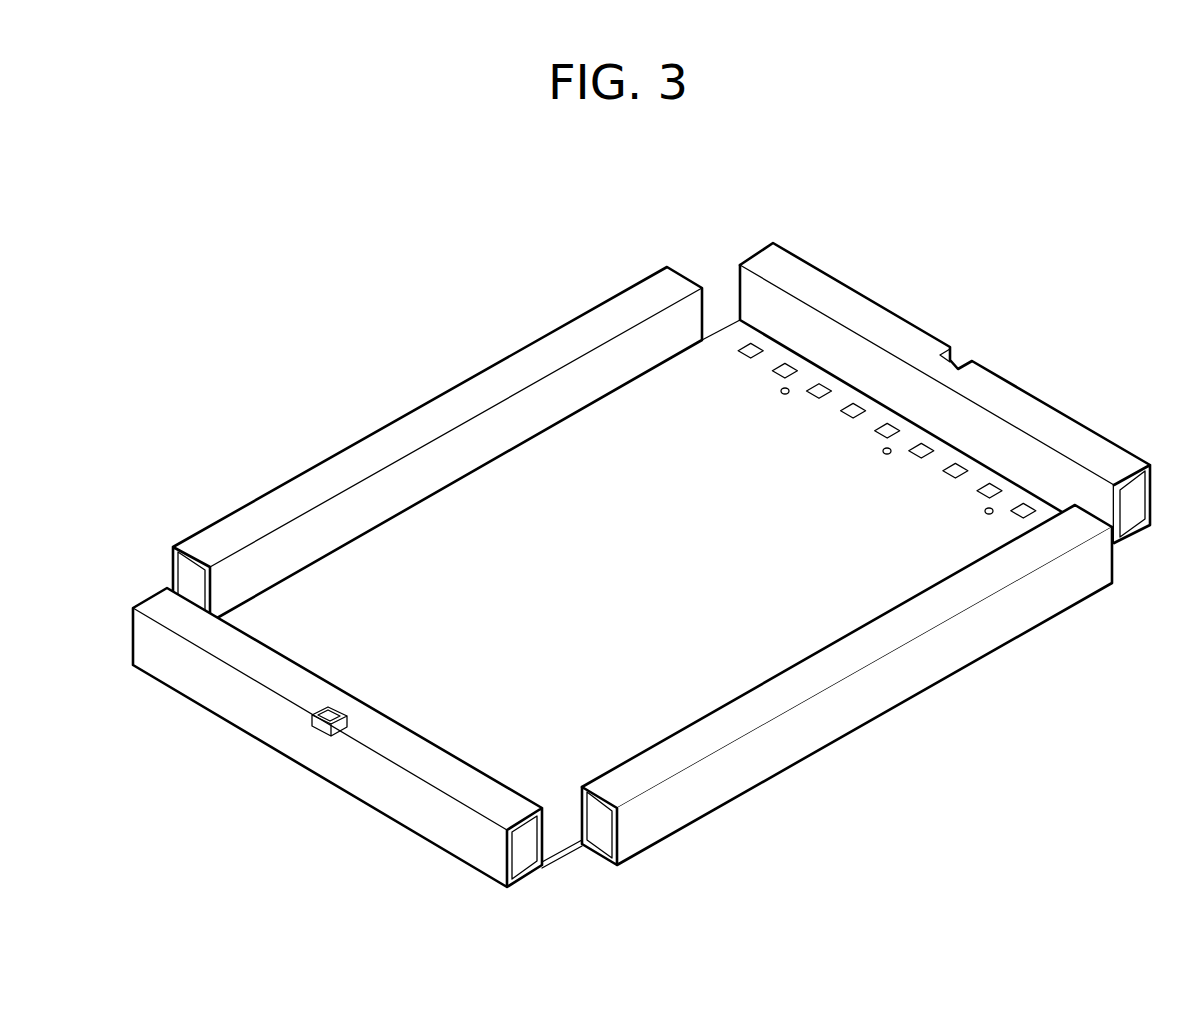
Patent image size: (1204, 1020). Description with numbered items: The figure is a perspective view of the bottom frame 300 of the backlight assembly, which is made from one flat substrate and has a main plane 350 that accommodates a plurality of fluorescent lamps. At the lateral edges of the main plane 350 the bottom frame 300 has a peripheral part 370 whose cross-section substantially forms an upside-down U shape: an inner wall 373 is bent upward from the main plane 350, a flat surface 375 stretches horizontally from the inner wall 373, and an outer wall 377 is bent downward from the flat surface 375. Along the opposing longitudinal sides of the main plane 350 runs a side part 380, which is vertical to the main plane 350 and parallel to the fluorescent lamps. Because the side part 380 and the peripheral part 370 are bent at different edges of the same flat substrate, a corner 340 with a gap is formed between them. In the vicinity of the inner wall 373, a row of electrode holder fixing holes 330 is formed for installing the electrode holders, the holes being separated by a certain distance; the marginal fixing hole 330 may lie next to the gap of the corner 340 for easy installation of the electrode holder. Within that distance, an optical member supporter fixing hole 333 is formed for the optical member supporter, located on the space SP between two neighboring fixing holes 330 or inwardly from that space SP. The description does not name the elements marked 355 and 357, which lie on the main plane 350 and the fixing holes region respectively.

The bottom frame 300 is at (606, 216).
The electrode holder fixing hole 330 is at (1025, 505).
The space SP is at (975, 482).
The optical member supporter fixing hole 333 is at (992, 513).
The corner 340 is at (725, 285).
The main plane 350 is at (847, 685).
The upper surface of front support bar 355 is at (770, 647).
The pad opening 357 is at (920, 470).
The peripheral part 370 is at (945, 376).
The inner wall 373 is at (807, 320).
The flat surface 375 is at (247, 660).
The outer wall 377 is at (395, 797).
The side part 380 is at (420, 463).